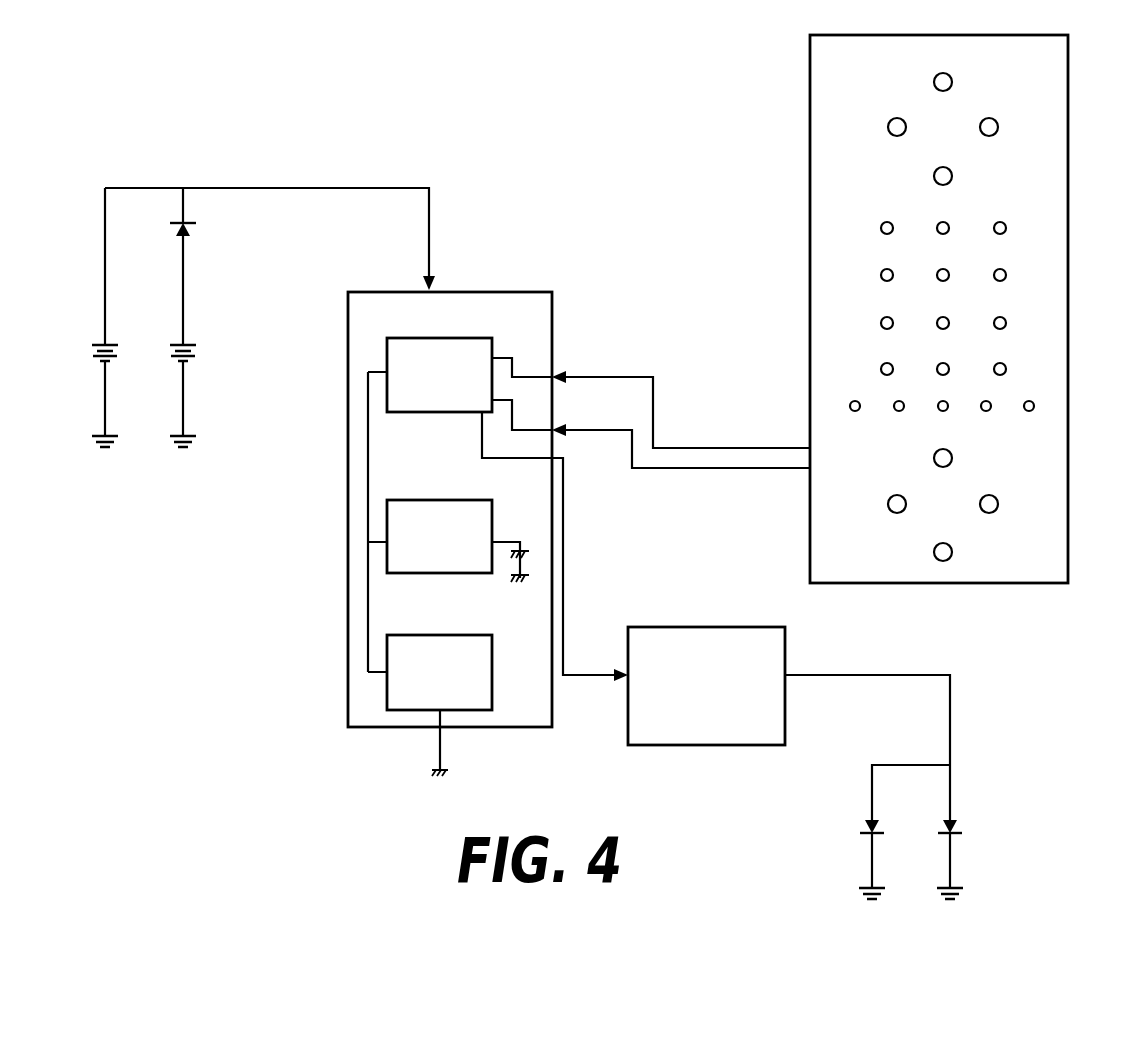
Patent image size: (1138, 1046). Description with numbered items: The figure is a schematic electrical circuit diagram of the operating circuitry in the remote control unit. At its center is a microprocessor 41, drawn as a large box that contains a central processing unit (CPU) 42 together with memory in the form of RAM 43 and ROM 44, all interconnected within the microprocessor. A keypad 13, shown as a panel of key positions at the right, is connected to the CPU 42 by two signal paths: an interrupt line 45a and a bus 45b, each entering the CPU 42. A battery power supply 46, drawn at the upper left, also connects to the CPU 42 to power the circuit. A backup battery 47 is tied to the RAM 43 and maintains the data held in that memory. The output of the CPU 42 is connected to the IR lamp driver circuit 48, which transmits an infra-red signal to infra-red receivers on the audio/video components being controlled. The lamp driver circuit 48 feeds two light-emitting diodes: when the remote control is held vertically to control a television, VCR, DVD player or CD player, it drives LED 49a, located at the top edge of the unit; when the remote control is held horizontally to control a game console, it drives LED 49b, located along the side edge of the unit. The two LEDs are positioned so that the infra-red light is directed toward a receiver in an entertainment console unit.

The keypad 13 is at (1057, 118).
The microprocessor 41 is at (495, 290).
The central processing unit 42 is at (473, 336).
The RAM 43 is at (473, 499).
The ROM 44 is at (473, 634).
The interrupt line 45a is at (653, 425).
The bus 45b is at (652, 468).
The battery power supply 46 is at (429, 214).
The backup battery 47 is at (500, 540).
The IR lamp driver circuit 48 is at (707, 626).
The LED 49a is at (950, 777).
The LED 49b is at (872, 777).